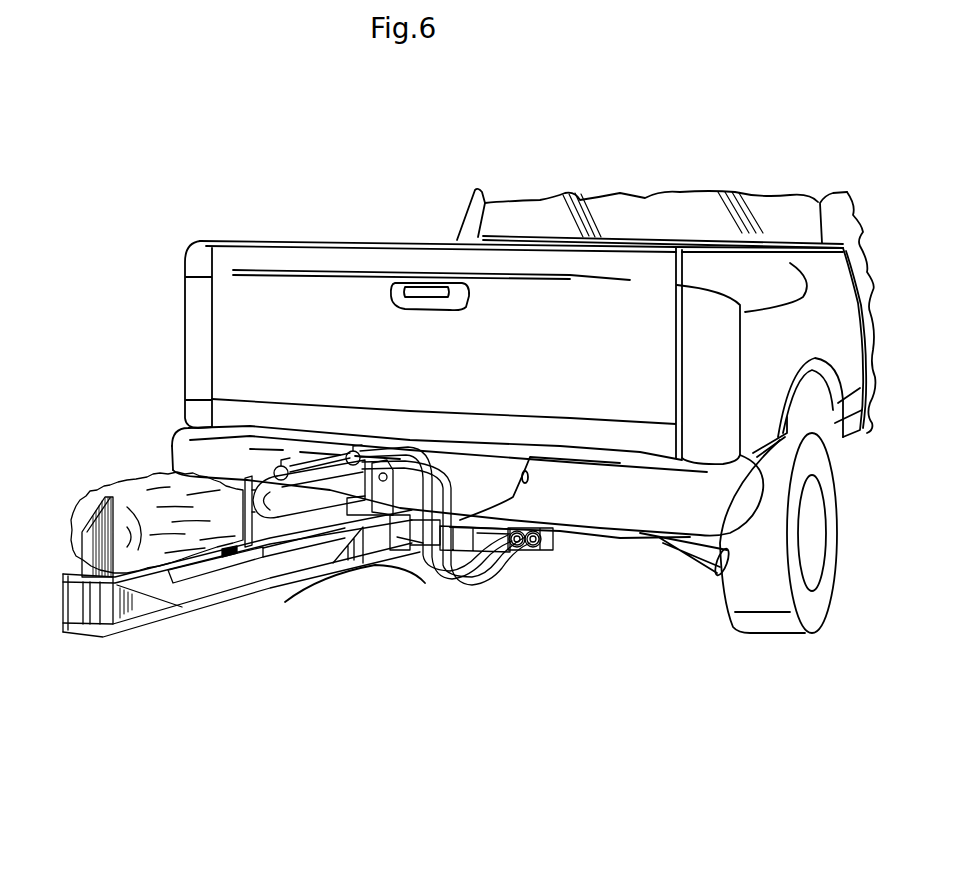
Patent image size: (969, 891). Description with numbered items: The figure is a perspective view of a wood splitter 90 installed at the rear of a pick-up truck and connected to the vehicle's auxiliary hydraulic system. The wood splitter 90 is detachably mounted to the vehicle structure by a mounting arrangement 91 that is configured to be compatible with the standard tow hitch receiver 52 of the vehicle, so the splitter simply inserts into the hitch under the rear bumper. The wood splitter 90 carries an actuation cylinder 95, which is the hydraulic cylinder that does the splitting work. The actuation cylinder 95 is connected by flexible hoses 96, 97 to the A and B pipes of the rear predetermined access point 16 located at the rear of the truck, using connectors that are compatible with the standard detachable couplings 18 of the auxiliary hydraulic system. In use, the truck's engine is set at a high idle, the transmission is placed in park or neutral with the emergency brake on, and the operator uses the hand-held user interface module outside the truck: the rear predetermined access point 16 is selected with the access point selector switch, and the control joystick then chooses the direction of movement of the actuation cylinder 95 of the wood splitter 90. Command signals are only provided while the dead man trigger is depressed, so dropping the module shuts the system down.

The rear predetermined access point 16 is at (533, 568).
The standard detachable couplings 18 is at (507, 560).
The standard tow hitch receiver 52 is at (362, 558).
The wood splitter 90 is at (336, 554).
The mounting arrangement 91 is at (357, 580).
The actuation cylinder 95 is at (300, 495).
The flexible hose 96 is at (440, 560).
The flexible hose 97 is at (487, 560).
The A pipe A is at (527, 533).
The B pipe B is at (550, 537).